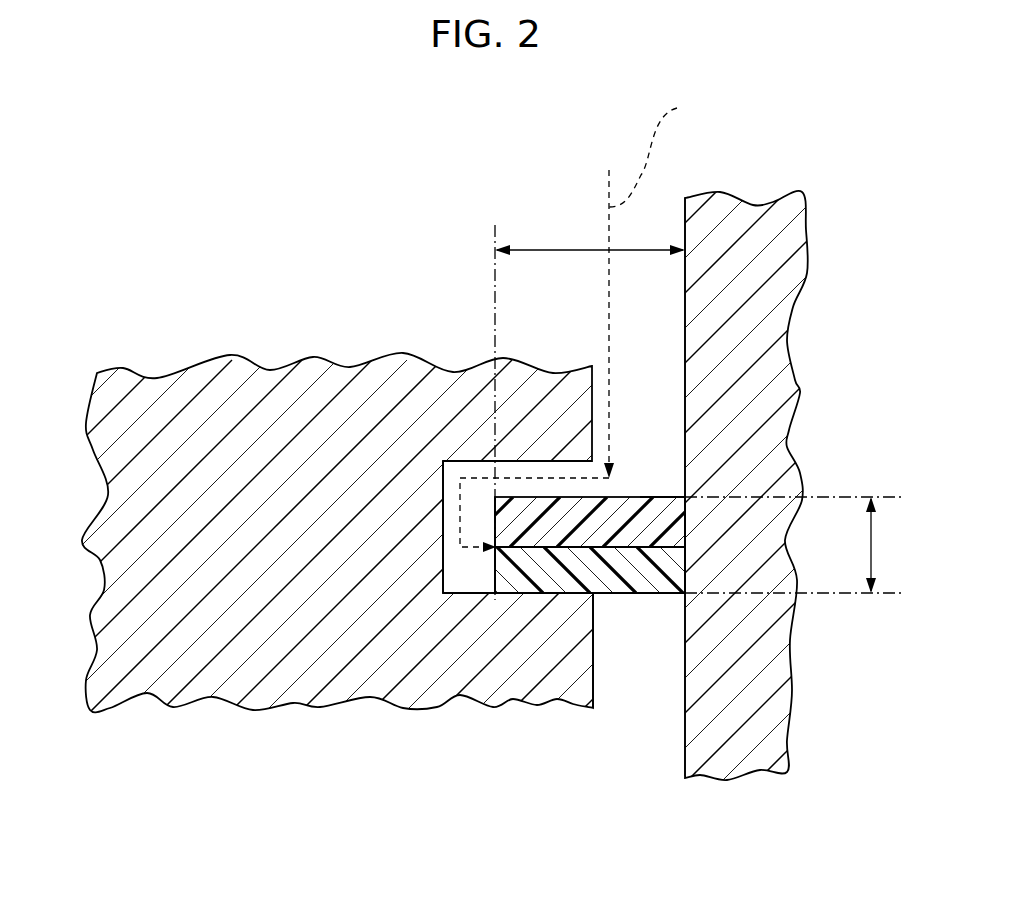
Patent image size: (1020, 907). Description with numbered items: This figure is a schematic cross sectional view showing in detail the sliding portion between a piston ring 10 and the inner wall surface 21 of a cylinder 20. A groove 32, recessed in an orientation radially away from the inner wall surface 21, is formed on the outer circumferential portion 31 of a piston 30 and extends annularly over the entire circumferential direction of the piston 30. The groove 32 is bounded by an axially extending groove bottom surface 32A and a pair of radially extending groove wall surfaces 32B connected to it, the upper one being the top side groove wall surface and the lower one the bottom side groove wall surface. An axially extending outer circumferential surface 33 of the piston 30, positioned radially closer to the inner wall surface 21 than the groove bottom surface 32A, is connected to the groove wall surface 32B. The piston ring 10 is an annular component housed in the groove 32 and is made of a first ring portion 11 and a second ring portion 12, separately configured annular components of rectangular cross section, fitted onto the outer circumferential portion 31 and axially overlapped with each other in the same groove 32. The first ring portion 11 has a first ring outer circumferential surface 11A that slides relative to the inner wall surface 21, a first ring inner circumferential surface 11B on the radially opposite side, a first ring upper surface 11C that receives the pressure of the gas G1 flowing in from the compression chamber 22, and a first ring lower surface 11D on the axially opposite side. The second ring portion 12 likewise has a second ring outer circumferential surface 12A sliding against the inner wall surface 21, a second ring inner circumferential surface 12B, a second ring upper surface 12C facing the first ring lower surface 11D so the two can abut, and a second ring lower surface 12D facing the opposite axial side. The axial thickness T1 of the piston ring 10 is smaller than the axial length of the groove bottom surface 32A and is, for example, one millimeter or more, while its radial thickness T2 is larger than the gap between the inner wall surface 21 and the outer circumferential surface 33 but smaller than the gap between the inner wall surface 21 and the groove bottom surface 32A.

The piston ring 10 is at (582, 680).
The first ring portion 11 is at (598, 543).
The first ring outer circumferential surface 11A is at (687, 520).
The first ring inner circumferential surface 11B is at (496, 514).
The first ring upper surface 11C is at (642, 495).
The first ring lower surface 11D is at (687, 558).
The second ring portion 12 is at (612, 574).
The second ring outer circumferential surface 12A is at (687, 575).
The second ring inner circumferential surface 12B is at (493, 575).
The second ring upper surface 12C is at (557, 594).
The second ring lower surface 12D is at (661, 596).
The cylinder 20 is at (765, 383).
The inner wall surface 21 is at (684, 274).
The compression chamber 22 is at (410, 212).
The piston 30 is at (108, 548).
The outer circumferential portion 31 is at (620, 655).
The groove 32 is at (421, 550).
The groove bottom surface 32A is at (447, 568).
The groove wall surface 32B is at (450, 466).
The outer circumferential surface 33 is at (592, 390).
The gas G1 is at (590, 322).
The axial thickness T1 is at (801, 545).
The radial thickness T2 is at (590, 410).